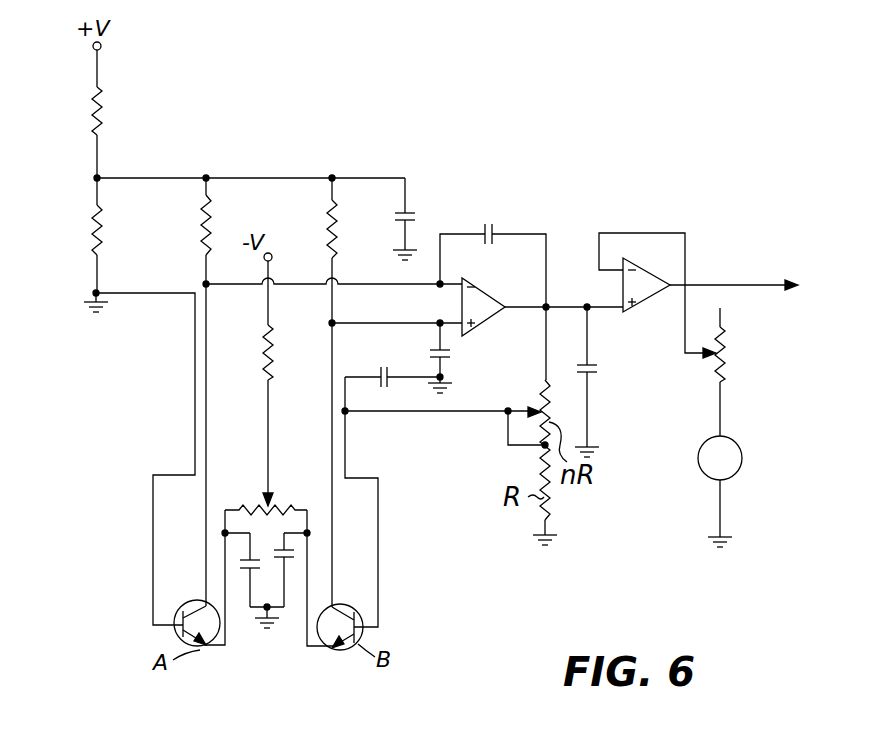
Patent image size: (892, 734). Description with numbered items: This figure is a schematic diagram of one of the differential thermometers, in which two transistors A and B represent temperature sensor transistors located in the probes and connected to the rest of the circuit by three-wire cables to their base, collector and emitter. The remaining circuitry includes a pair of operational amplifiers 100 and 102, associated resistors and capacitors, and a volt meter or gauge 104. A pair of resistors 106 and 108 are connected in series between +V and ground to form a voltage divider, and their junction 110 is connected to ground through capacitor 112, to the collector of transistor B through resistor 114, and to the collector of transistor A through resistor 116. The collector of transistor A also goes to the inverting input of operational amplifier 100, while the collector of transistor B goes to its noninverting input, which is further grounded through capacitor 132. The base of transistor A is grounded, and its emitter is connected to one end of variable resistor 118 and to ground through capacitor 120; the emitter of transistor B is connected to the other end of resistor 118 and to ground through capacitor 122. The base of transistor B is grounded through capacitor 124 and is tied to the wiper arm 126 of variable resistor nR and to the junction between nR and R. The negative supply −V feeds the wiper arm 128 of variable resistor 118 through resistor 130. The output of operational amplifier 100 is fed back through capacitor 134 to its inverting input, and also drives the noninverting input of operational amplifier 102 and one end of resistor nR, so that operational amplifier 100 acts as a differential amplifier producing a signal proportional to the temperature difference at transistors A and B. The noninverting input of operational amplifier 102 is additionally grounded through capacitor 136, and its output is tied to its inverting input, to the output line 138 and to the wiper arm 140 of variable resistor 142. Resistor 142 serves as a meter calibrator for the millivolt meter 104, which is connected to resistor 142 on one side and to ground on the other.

The operational amplifier 100 is at (530, 270).
The operational amplifier 102 is at (623, 282).
The volt meter or gauge 104 is at (740, 442).
The resistor 106 is at (101, 115).
The resistor 108 is at (94, 237).
The junction 110 is at (98, 176).
The capacitor 112 is at (412, 212).
The resistor 114 is at (326, 218).
The resistor 116 is at (204, 218).
The variable resistor 118 is at (257, 506).
The capacitor 120 is at (246, 570).
The capacitor 122 is at (288, 560).
The capacitor 124 is at (380, 372).
The wiper arm 126 is at (536, 410).
The wiper arm 128 is at (270, 478).
The resistor 130 is at (262, 376).
The capacitor 132 is at (448, 350).
The capacitor 134 is at (494, 224).
The capacitor 136 is at (592, 362).
The output line 138 is at (740, 284).
The wiper arm 140 is at (699, 353).
The variable resistor 142 is at (727, 332).